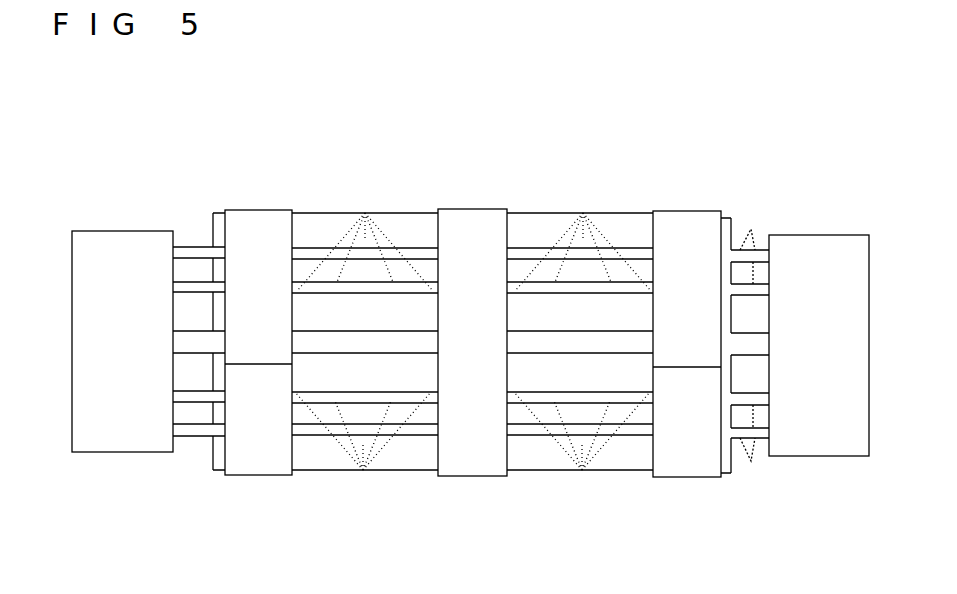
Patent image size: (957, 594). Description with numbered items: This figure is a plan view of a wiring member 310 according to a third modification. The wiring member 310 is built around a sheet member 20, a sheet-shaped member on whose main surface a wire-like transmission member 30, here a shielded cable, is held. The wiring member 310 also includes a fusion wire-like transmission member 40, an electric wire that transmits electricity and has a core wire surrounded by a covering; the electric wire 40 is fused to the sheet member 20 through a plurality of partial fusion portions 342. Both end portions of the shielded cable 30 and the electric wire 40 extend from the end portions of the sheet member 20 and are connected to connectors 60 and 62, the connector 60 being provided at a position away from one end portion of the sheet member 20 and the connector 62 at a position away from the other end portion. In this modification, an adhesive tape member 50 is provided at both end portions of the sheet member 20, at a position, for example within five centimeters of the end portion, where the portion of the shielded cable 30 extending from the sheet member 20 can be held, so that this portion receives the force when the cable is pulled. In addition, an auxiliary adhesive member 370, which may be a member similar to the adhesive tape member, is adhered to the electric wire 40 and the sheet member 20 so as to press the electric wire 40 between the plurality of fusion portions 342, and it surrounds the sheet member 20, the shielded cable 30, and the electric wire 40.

The wiring member 310 is at (641, 176).
The sheet member 20 is at (632, 478).
The wire-like transmission member 30 is at (357, 331).
The fusion wire-like transmission member 40 is at (751, 229).
The adhesive tape member 50 is at (254, 210).
The connector 60 is at (123, 231).
The connector 62 is at (813, 235).
The partial fusion portion 342 is at (365, 210).
The auxiliary adhesive member 370 is at (470, 209).